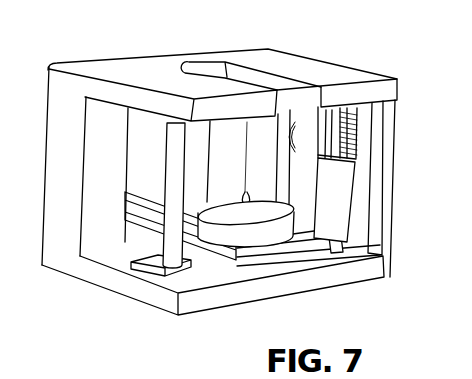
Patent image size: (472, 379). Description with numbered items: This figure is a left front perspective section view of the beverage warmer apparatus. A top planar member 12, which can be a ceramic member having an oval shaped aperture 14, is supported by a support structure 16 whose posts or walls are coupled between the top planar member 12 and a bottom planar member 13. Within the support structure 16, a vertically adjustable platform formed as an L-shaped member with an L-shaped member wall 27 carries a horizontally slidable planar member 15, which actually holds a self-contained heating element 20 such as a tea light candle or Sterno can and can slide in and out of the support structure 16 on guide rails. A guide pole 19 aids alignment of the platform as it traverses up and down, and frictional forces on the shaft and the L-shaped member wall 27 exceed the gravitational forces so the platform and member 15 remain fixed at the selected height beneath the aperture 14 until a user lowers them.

The top planar member 12 is at (222, 72).
The bottom planar member 13 is at (208, 290).
The aperture 14 is at (248, 75).
The horizontally slidable planar member 15 is at (336, 252).
The support structure 16 is at (70, 201).
The guide pole 19 is at (170, 243).
The self-contained heating element 20 is at (263, 233).
The L-shaped member wall 27 is at (347, 214).